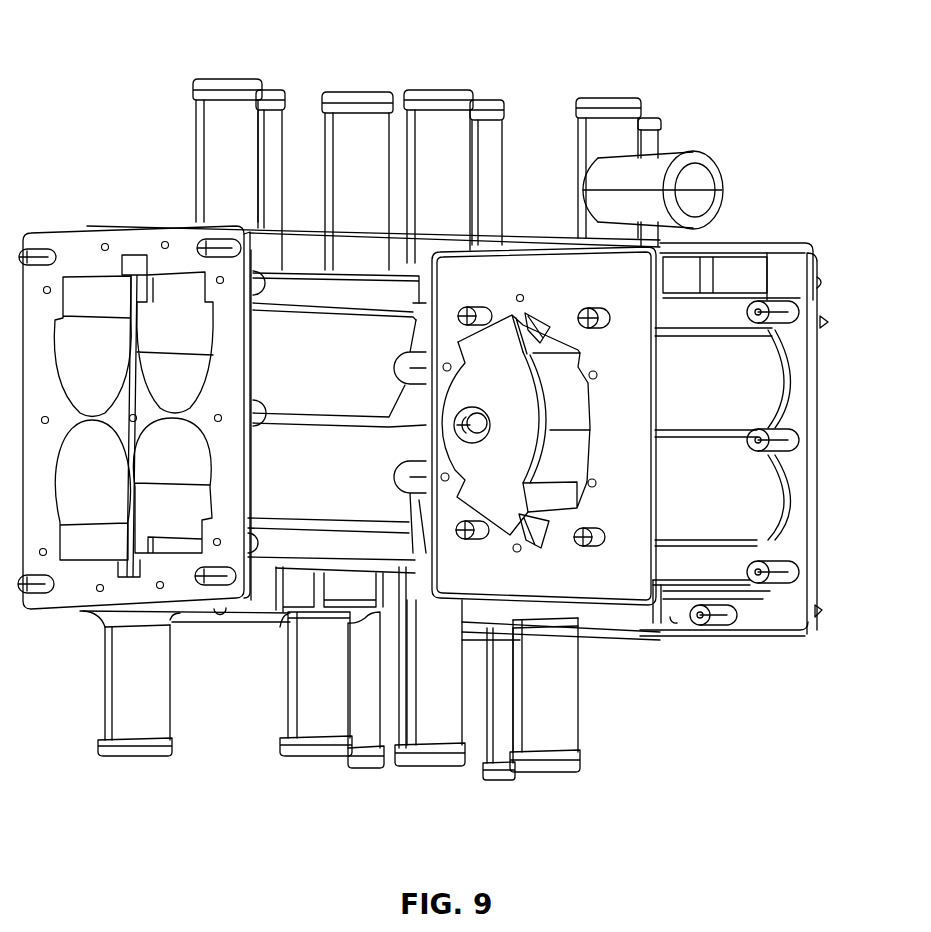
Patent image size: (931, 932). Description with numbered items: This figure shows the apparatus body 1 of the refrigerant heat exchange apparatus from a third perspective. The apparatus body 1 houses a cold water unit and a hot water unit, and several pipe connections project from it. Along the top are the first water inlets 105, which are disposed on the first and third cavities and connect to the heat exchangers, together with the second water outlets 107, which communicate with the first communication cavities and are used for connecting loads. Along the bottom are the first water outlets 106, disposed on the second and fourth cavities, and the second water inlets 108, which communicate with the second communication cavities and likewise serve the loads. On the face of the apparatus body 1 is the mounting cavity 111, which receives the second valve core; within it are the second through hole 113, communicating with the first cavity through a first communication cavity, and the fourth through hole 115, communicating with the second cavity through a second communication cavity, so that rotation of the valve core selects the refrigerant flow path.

The apparatus body 1 is at (824, 320).
The first water inlet 105 is at (357, 96).
The first water outlet 106 is at (368, 767).
The second water outlet 107 is at (221, 80).
The second water inlet 108 is at (118, 703).
The mounting cavity 111 is at (580, 403).
The second through hole 113 is at (548, 324).
The fourth through hole 115 is at (538, 542).